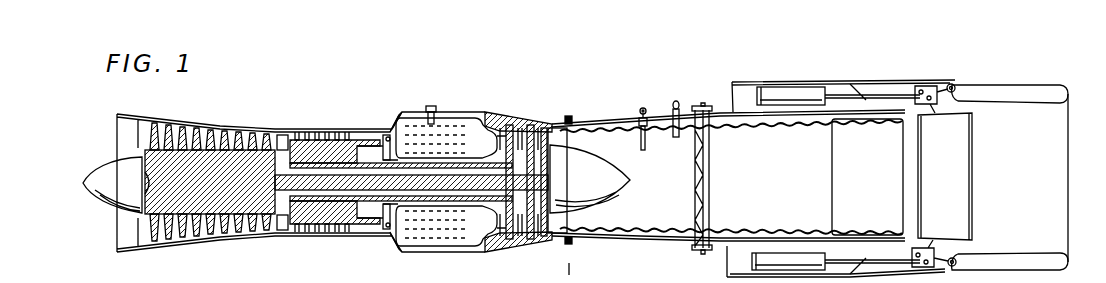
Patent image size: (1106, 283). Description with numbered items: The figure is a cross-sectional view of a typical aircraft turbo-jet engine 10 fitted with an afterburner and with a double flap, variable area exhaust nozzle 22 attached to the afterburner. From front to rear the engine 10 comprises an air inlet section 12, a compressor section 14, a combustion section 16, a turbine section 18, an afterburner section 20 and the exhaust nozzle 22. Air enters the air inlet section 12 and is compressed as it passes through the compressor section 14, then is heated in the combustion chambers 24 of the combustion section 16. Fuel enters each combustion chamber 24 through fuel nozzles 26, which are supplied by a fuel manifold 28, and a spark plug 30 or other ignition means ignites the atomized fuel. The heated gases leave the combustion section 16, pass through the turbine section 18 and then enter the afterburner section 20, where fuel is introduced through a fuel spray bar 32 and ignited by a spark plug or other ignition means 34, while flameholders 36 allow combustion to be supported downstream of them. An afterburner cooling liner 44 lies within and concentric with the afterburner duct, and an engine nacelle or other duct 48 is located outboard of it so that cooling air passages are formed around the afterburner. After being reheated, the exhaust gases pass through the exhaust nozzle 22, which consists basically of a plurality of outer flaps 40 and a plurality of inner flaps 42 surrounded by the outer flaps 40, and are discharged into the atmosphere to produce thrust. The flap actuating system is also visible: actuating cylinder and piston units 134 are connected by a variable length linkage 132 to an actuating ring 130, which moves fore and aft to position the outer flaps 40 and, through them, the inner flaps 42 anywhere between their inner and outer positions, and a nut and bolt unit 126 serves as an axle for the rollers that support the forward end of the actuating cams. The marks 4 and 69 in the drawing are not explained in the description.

The section view indicator 4 is at (431, 106).
The aircraft turbo-jet engine 10 is at (355, 123).
The air inlet section 12 is at (127, 131).
The compressor section 14 is at (235, 122).
The combustion section 16 is at (491, 128).
The turbine section 18 is at (535, 130).
The afterburner section 20 is at (740, 112).
The exhaust nozzle 22 is at (1010, 158).
The combustion chamber 24 is at (469, 121).
The fuel nozzle 26 is at (395, 112).
The fuel manifold 28 is at (376, 142).
The spark plug 30 is at (443, 108).
The fuel spray bar 32 is at (636, 130).
The ignition means 34 is at (681, 114).
The flameholder 36 is at (698, 150).
The outer flap 40 is at (1009, 102).
The inner flap 42 is at (934, 117).
The afterburner cooling liner 44 is at (777, 125).
The engine nacelle 48 is at (823, 82).
The actuator rod 69 is at (874, 84).
The nut and bolt unit 126 is at (953, 84).
The actuating ring 130 is at (936, 83).
The variable length linkage 132 is at (871, 108).
The actuating cylinder and piston unit 134 is at (786, 95).